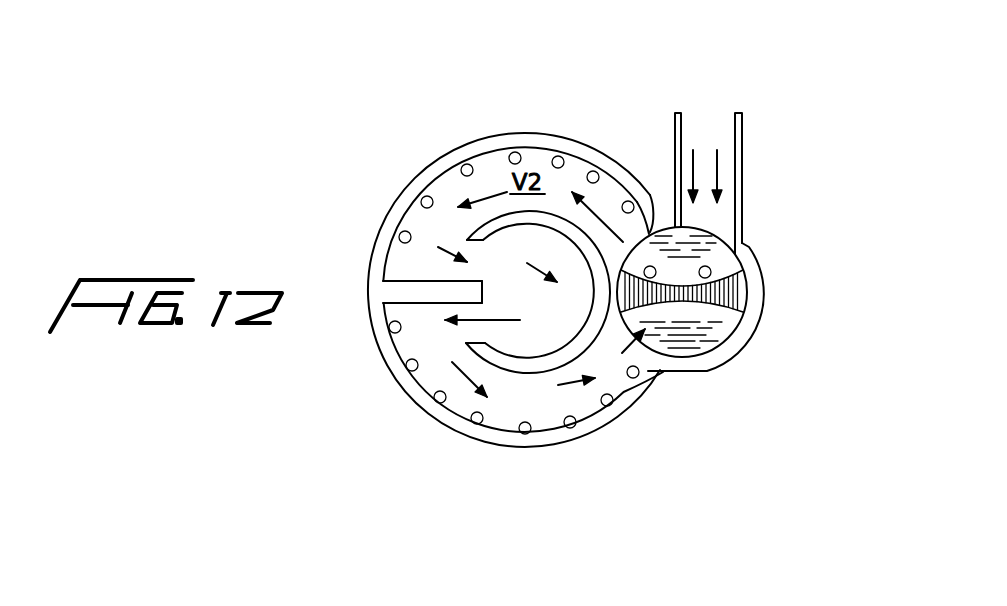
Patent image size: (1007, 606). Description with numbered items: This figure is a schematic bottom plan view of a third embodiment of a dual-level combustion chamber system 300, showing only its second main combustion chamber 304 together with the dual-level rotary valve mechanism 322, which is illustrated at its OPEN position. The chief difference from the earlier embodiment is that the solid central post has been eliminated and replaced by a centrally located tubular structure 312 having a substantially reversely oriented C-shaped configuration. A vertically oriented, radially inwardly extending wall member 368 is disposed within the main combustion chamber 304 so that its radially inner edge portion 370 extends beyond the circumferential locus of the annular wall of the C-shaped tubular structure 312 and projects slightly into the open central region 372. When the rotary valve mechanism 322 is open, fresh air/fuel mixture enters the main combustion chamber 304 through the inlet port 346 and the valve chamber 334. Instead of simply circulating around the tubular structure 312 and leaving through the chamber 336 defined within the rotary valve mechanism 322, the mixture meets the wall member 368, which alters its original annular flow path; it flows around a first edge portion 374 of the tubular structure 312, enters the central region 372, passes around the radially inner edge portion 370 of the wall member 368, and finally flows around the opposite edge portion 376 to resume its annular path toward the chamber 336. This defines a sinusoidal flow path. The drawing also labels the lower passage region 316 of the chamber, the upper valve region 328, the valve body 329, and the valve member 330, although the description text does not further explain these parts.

The dual-level combustion chamber system 300 is at (727, 107).
The second main combustion chamber 304 is at (447, 193).
The tubular structure 312 is at (497, 367).
The lower flow passage 316 is at (453, 407).
The dual-level rotary valve mechanism 322 is at (623, 325).
The upper chamber of valve 328 is at (652, 250).
The valve body 329 is at (672, 353).
The valve member / seal band 330 is at (738, 290).
The valve chamber 334 is at (688, 245).
The chamber 336 is at (700, 340).
The inlet port 346 is at (732, 229).
The wall member 368 is at (386, 304).
The radially inner edge portion 370 is at (483, 303).
The open central region 372 is at (545, 232).
The first edge portion 374 is at (464, 240).
The opposite edge portion 376 is at (466, 343).